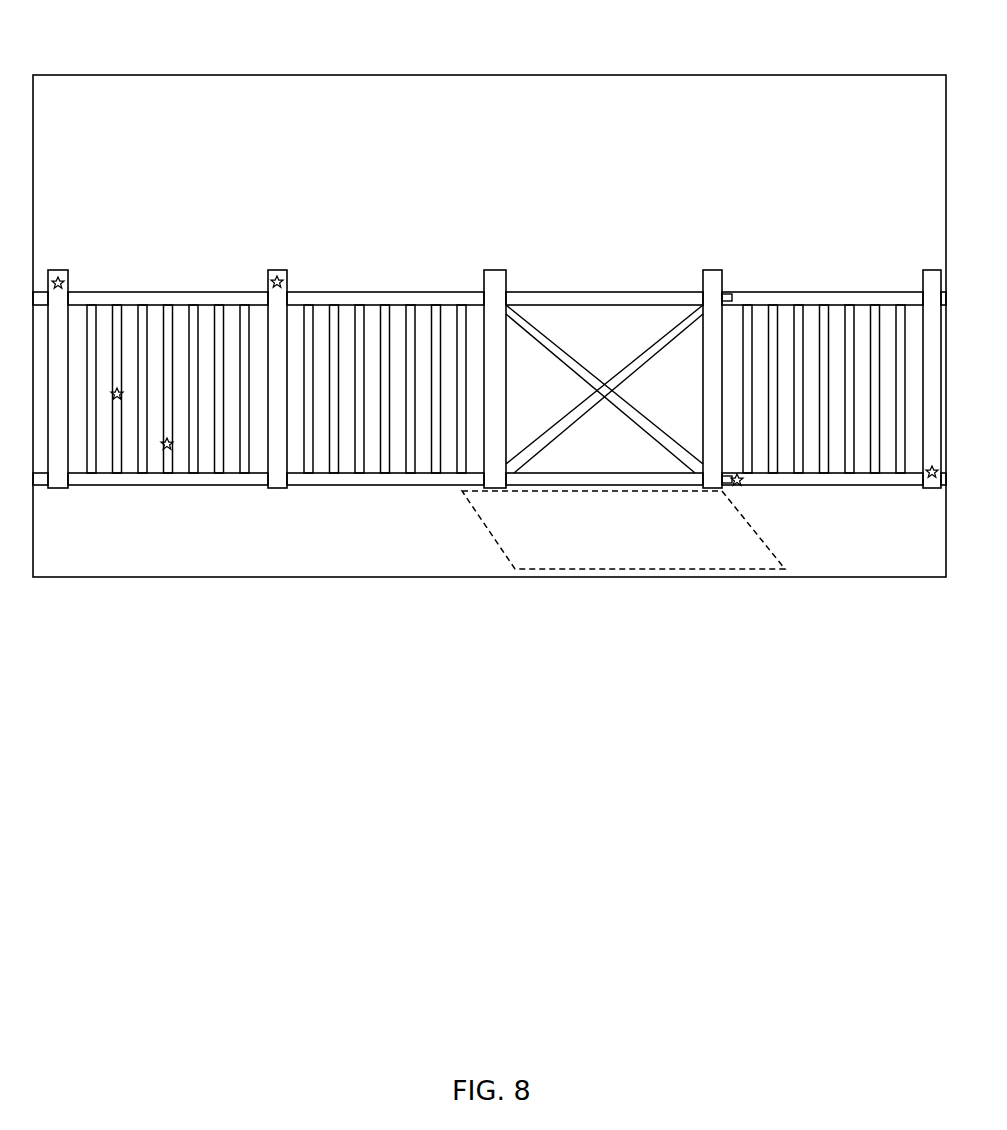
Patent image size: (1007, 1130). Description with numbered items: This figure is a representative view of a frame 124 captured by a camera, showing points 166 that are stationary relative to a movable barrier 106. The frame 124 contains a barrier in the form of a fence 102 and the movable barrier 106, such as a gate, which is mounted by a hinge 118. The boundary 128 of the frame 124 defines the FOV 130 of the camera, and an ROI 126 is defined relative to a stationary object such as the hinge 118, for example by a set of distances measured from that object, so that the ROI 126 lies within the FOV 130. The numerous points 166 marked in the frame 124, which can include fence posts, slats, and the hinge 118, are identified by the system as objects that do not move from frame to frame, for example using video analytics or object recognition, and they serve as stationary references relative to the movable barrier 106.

The fence 102 is at (212, 292).
The movable barrier 106 is at (597, 292).
The hinge 118 is at (730, 294).
The frame 124 is at (158, 64).
The ROI 126 is at (488, 534).
The boundary 128 is at (707, 75).
The FOV 130 is at (329, 101).
The points 166 is at (72, 276).